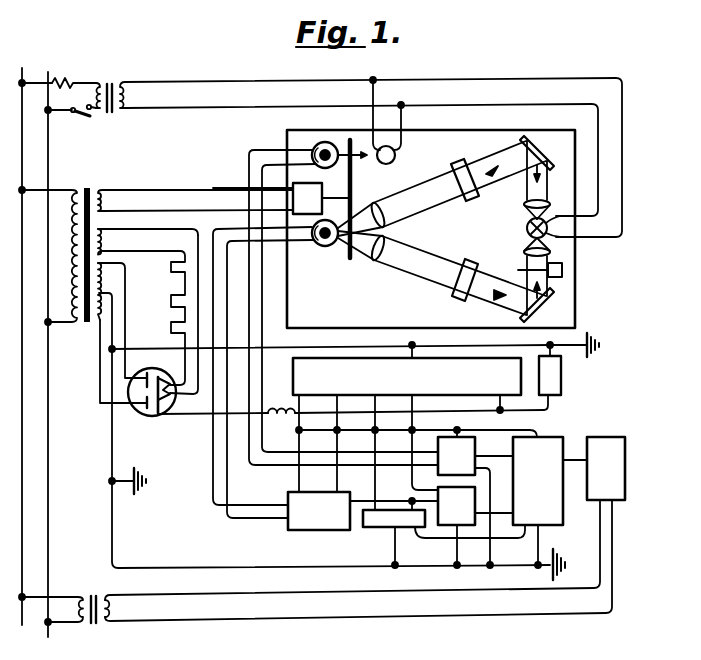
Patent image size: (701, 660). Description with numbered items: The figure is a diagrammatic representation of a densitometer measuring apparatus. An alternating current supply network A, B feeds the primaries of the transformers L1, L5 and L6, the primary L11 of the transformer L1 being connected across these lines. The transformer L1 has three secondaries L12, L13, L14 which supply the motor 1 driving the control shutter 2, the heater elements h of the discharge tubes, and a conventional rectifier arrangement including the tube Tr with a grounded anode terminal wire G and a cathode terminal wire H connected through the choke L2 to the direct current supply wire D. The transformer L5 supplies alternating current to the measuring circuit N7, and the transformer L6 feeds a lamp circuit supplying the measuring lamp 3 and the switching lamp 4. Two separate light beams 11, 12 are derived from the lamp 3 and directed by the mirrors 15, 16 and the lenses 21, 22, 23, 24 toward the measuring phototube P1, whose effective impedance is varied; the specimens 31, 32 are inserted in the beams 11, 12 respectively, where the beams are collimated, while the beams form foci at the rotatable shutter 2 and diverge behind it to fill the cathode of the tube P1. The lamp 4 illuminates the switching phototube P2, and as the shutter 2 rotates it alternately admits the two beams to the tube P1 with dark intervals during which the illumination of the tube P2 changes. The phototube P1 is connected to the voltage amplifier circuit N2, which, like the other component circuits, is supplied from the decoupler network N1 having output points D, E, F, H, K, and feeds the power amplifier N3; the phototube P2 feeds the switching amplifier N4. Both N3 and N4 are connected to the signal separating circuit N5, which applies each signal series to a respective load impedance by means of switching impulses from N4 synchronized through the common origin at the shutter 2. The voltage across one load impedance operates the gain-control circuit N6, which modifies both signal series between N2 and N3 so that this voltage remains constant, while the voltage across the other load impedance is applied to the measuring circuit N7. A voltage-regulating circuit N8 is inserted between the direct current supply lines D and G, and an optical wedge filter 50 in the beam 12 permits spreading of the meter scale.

The alternating current supply network A is at (25, 466).
The alternating current supply network B is at (50, 491).
The transformer L6 is at (110, 89).
The transformer L1 is at (157, 273).
The primary of transformer L1 L11 is at (73, 278).
The secondary of transformer L1 L12 is at (97, 332).
The secondary of transformer L1 L13 is at (148, 242).
The secondary of transformer L1 L14 is at (195, 201).
The heater elements h is at (171, 268).
The cathode terminal wire H is at (197, 418).
The tube Tr is at (150, 418).
The choke L2 is at (280, 406).
The grounded anode terminal wire G is at (124, 567).
The transformer L5 is at (65, 600).
The switching phototube P2 is at (312, 148).
The measuring phototube P1 is at (322, 247).
The motor 1 is at (310, 191).
The control shutter 2 is at (354, 176).
The switching lamp 4 is at (396, 152).
The light beam 11 is at (502, 168).
The light beam 12 is at (510, 298).
The lens 23 is at (386, 222).
The lens 24 is at (394, 244).
The specimen 31 is at (447, 172).
The specimen 32 is at (448, 292).
The mirror 15 is at (541, 152).
The mirror 16 is at (541, 305).
The lens 21 is at (525, 205).
The lens 22 is at (524, 253).
The measuring lamp 3 is at (580, 236).
The optical wedge filter 50 is at (562, 270).
The decoupler network N1 is at (407, 376).
The voltage-regulating circuit N8 is at (561, 376).
The direct current supply wire D is at (505, 413).
The output point E is at (288, 434).
The output point F is at (329, 434).
The output point K is at (404, 434).
The voltage amplifier circuit N2 is at (319, 511).
The power amplifier N3 is at (456, 506).
The switching amplifier N4 is at (456, 456).
The signal separating circuit N5 is at (538, 481).
The gain-control circuit N6 is at (394, 518).
The measuring circuit N7 is at (606, 468).